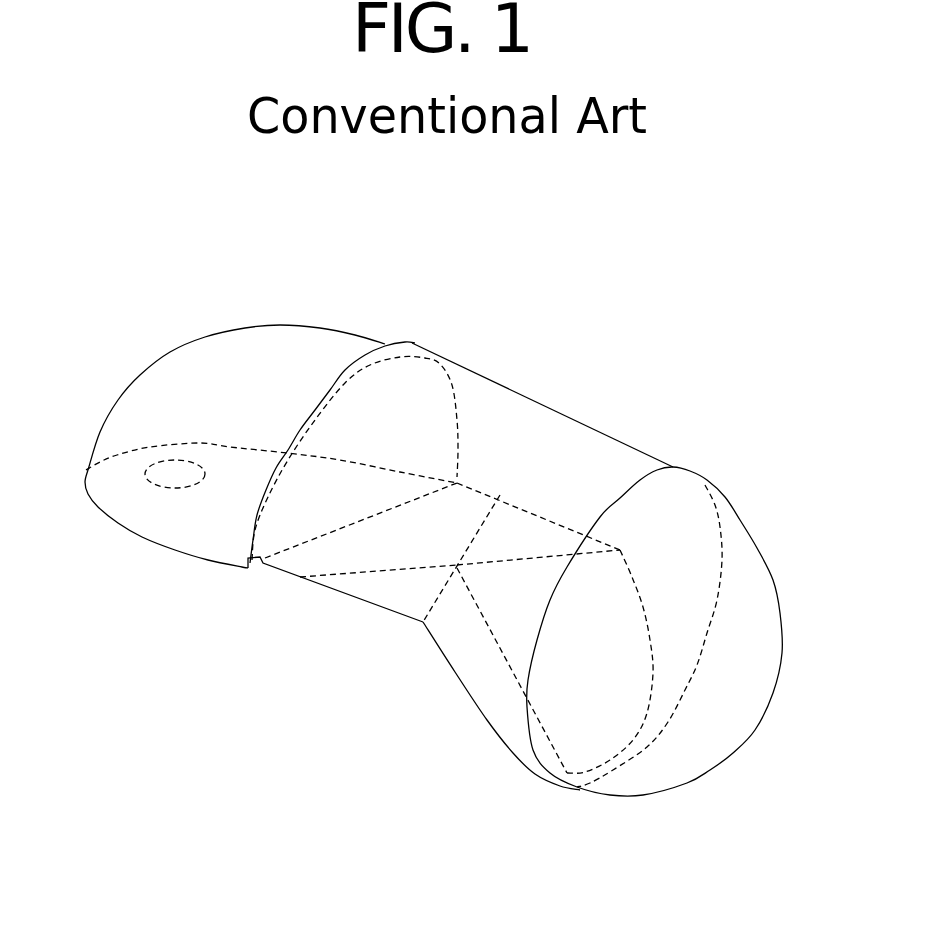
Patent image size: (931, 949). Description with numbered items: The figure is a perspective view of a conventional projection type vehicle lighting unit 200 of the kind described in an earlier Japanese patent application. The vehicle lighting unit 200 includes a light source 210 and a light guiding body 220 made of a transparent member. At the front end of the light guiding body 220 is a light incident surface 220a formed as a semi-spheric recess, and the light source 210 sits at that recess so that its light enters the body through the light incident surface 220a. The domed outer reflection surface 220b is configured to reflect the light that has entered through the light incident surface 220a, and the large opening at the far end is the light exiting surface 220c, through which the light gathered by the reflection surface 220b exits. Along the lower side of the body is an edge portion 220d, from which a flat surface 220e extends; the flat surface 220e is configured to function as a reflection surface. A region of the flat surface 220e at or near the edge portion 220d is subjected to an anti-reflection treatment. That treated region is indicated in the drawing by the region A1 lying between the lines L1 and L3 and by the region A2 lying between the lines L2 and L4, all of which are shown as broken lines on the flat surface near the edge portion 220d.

The vehicle lighting unit 200 is at (426, 289).
The light source 210 is at (173, 460).
The light guiding body 220 is at (538, 406).
The light incident surface 220a is at (208, 470).
The reflection surface 220b is at (196, 346).
The light exiting surface 220c is at (748, 549).
The edge portion 220d is at (458, 567).
The flat surface 220e is at (388, 600).
The region A1 is at (340, 586).
The region A2 is at (555, 527).
The line L1 is at (395, 572).
The line L2 is at (482, 530).
The line L3 is at (437, 604).
The line L4 is at (540, 557).